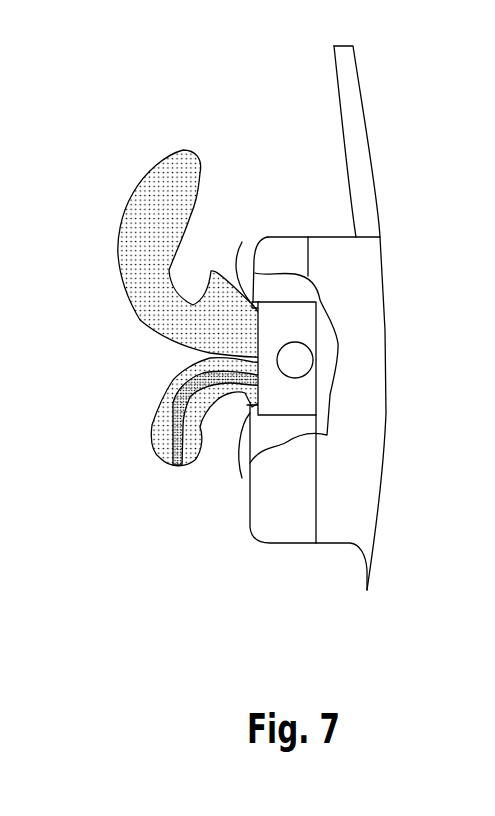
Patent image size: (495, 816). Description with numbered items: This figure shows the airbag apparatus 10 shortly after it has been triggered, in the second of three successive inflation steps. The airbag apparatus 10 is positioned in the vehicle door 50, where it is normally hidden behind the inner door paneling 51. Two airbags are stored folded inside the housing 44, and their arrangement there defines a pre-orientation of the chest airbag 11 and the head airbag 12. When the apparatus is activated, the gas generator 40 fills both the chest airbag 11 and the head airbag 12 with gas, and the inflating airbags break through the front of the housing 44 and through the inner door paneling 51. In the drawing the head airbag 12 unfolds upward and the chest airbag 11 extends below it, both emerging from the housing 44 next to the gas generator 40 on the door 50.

The airbag apparatus 10 is at (183, 311).
The chest airbag 11 is at (158, 446).
The head airbag 12 is at (146, 188).
The gas generator 40 is at (298, 362).
The housing 44 is at (295, 302).
The vehicle door 50 is at (363, 265).
The door paneling 51 is at (252, 472).